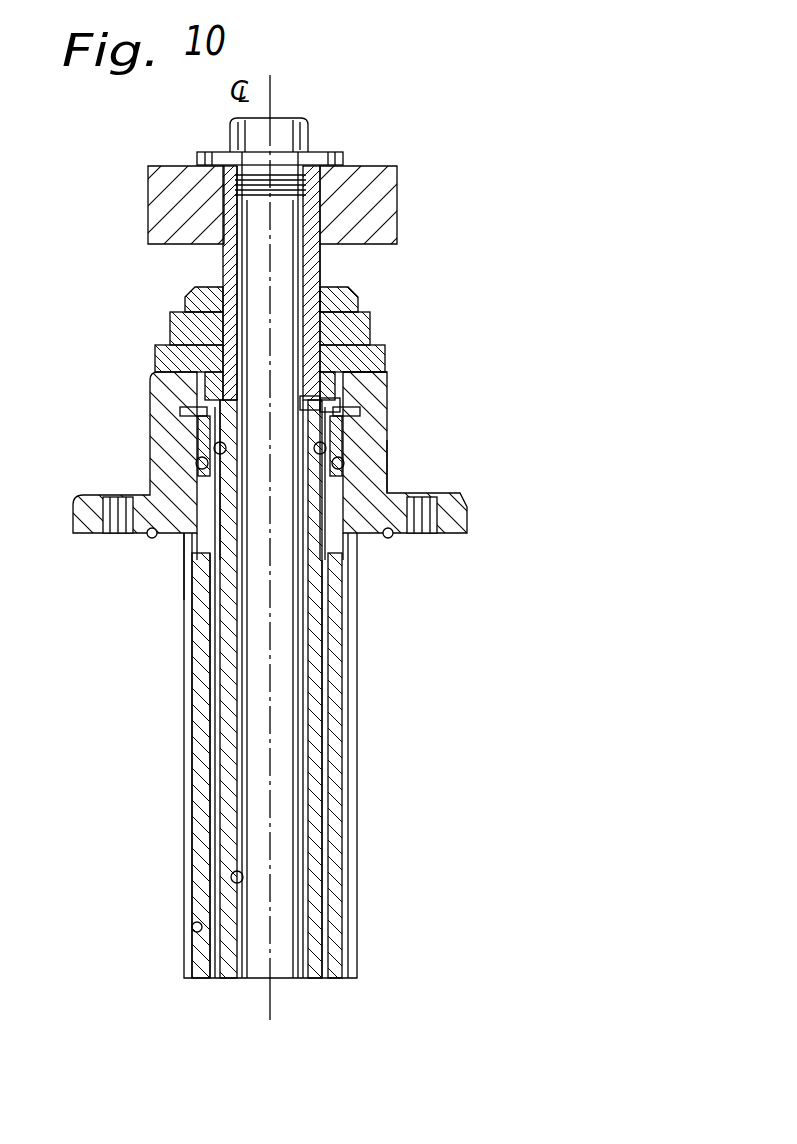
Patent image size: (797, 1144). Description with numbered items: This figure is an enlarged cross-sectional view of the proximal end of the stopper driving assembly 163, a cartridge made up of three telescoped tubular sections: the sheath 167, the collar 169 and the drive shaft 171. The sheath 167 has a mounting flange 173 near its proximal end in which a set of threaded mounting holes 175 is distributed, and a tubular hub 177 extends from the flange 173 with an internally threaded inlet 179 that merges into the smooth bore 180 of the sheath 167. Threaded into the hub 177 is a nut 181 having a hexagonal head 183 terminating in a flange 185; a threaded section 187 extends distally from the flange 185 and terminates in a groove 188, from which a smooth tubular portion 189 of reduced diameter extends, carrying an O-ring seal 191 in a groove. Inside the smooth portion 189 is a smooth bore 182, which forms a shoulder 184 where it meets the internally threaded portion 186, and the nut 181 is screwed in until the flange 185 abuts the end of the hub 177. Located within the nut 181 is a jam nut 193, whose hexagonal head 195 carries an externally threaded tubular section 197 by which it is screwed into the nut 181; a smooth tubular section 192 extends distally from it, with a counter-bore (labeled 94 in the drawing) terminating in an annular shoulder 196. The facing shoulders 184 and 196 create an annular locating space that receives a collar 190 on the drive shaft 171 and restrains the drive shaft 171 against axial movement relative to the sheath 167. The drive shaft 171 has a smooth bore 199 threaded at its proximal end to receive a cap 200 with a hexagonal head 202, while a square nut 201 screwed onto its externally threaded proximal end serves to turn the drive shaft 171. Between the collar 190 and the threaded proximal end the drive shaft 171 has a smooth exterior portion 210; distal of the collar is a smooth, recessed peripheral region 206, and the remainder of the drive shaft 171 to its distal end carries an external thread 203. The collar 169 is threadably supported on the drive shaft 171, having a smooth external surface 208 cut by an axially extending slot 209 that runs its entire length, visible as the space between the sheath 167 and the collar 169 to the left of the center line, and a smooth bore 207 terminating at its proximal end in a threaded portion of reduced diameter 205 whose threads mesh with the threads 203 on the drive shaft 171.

The stem thread 94 is at (228, 398).
The stopper driving assembly 163 is at (553, 609).
The sheath 167 is at (357, 746).
The collar 169 is at (335, 797).
The drive shaft 171 is at (323, 838).
The mounting flange 173 is at (447, 492).
The threaded mounting holes 175 is at (115, 537).
The tubular hub 177 is at (320, 404).
The internally threaded inlet 179 is at (212, 447).
The smooth bore 180 is at (192, 924).
The nut 181 is at (383, 345).
The smooth bore 182 is at (258, 440).
The hexagonal head 183 is at (358, 304).
The shoulder 184 is at (326, 452).
The flange 185 is at (205, 382).
The internally threaded portion 186 is at (370, 330).
The threaded section 187 is at (188, 420).
The groove 188 is at (196, 440).
The smooth tubular portion 189 is at (197, 466).
The collar 190 is at (385, 383).
The O-ring seal 191 is at (384, 466).
The smooth tubular section 192 is at (180, 408).
The jam nut 193 is at (186, 288).
The hexagonal head 195 is at (178, 320).
The annular shoulder 196 is at (305, 404).
The externally threaded tubular section 197 is at (165, 352).
The smooth bore 199 is at (232, 872).
The cap 200 is at (345, 152).
The square nut 201 is at (376, 164).
The hexagonal head 202 is at (308, 136).
The external thread 203 is at (187, 560).
The threaded portion of reduced diameter 205 is at (338, 610).
The recessed peripheral region 206 is at (168, 540).
The smooth bore 207 is at (338, 698).
The smooth external surface 208 is at (345, 862).
The axially extending slot 209 is at (200, 710).
The smooth exterior portion 210 is at (222, 250).